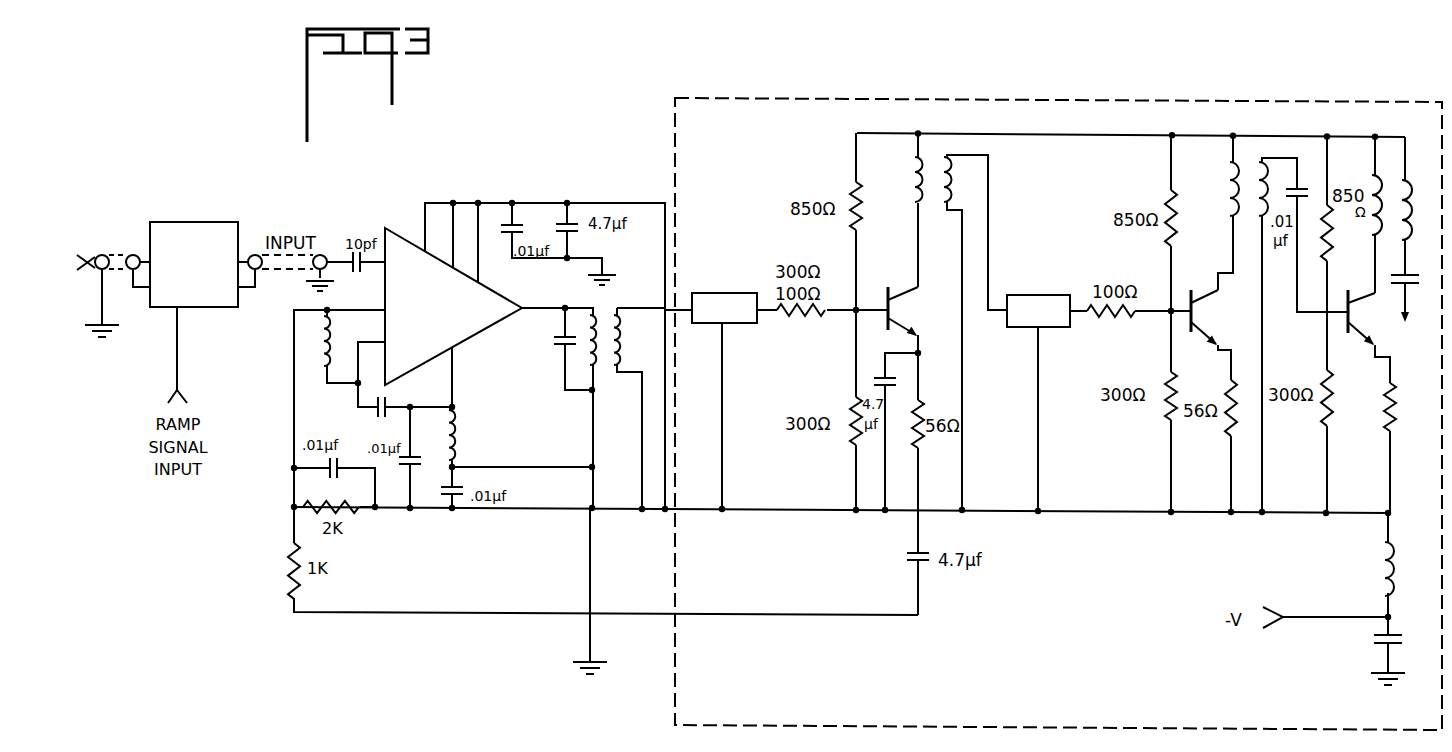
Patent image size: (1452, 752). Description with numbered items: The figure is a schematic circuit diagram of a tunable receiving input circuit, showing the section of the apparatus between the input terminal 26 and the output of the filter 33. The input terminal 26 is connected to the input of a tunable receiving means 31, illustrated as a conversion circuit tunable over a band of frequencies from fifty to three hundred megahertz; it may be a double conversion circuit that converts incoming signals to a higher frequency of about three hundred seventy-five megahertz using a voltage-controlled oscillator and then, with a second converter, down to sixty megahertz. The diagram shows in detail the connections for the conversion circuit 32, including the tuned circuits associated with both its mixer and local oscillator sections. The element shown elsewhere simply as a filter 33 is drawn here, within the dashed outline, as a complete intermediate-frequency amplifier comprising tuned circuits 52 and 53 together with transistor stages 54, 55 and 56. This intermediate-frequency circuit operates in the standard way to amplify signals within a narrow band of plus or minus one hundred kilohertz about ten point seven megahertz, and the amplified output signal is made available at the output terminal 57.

The input terminal 26 is at (88, 253).
The tunable receiving means 31 is at (190, 222).
The conversion circuit 32 is at (492, 326).
The filter 33 is at (800, 98).
The tuned circuit 52 is at (700, 293).
The tuned circuit 53 is at (1012, 295).
The transistor stage 54 is at (905, 293).
The transistor stage 55 is at (1206, 297).
The transistor stage 56 is at (1346, 302).
The output terminal 57 is at (1404, 314).